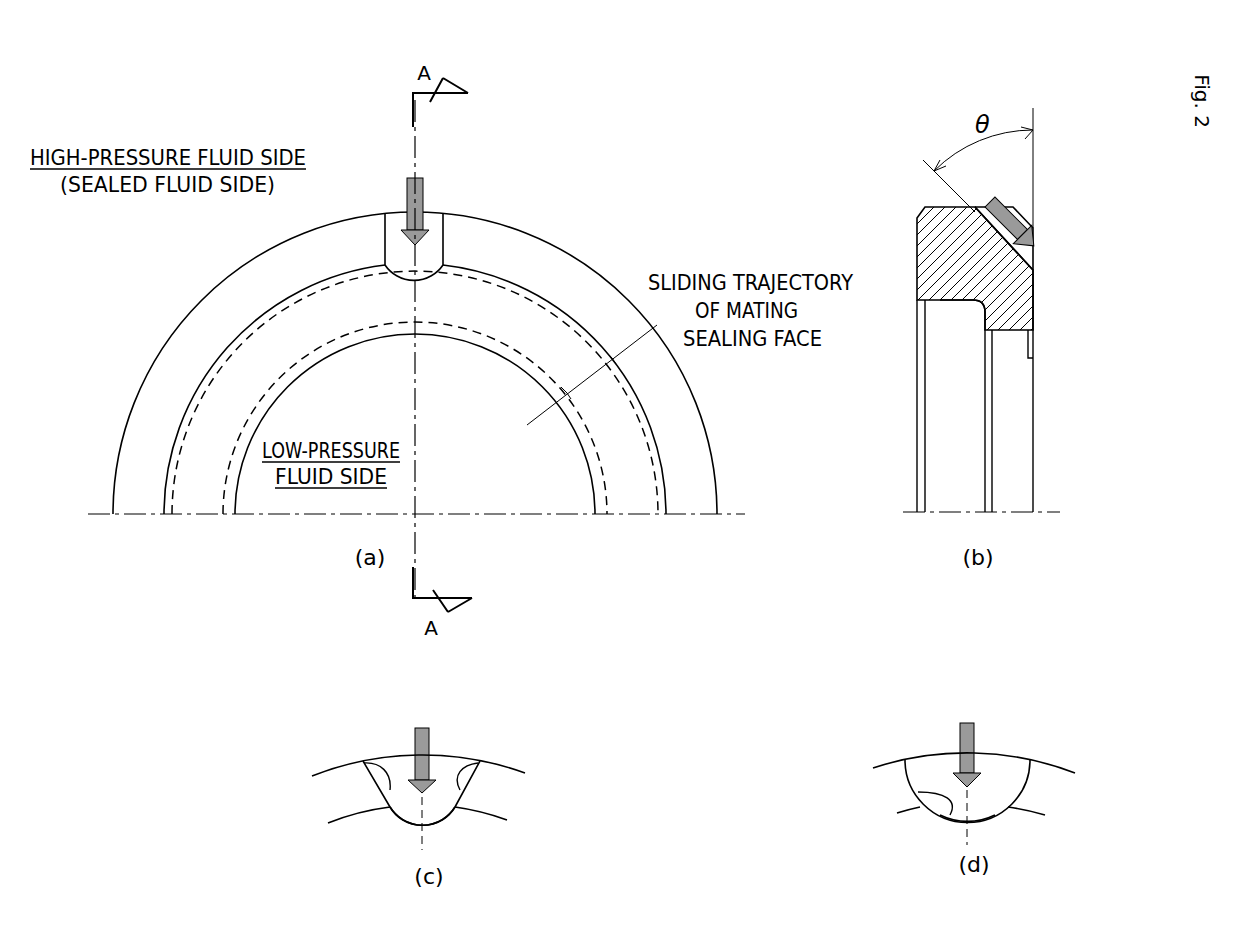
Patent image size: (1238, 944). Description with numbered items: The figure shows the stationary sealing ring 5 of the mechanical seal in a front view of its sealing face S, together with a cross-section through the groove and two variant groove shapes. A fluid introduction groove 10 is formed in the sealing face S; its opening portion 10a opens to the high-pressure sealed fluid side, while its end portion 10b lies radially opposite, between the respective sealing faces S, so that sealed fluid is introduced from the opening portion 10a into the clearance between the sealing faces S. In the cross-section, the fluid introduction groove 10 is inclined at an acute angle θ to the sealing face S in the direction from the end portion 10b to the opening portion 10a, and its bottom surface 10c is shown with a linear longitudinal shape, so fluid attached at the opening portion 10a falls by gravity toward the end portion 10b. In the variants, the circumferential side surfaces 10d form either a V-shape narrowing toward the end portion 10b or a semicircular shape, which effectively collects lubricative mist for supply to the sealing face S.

The stationary sealing ring 5 is at (352, 217).
The fluid introduction groove 10 is at (435, 235).
The opening portion 10a is at (428, 210).
The end portion 10b is at (445, 278).
The bottom surface 10c is at (983, 307).
The side surface 10d is at (365, 760).
The sealing face S is at (278, 330).